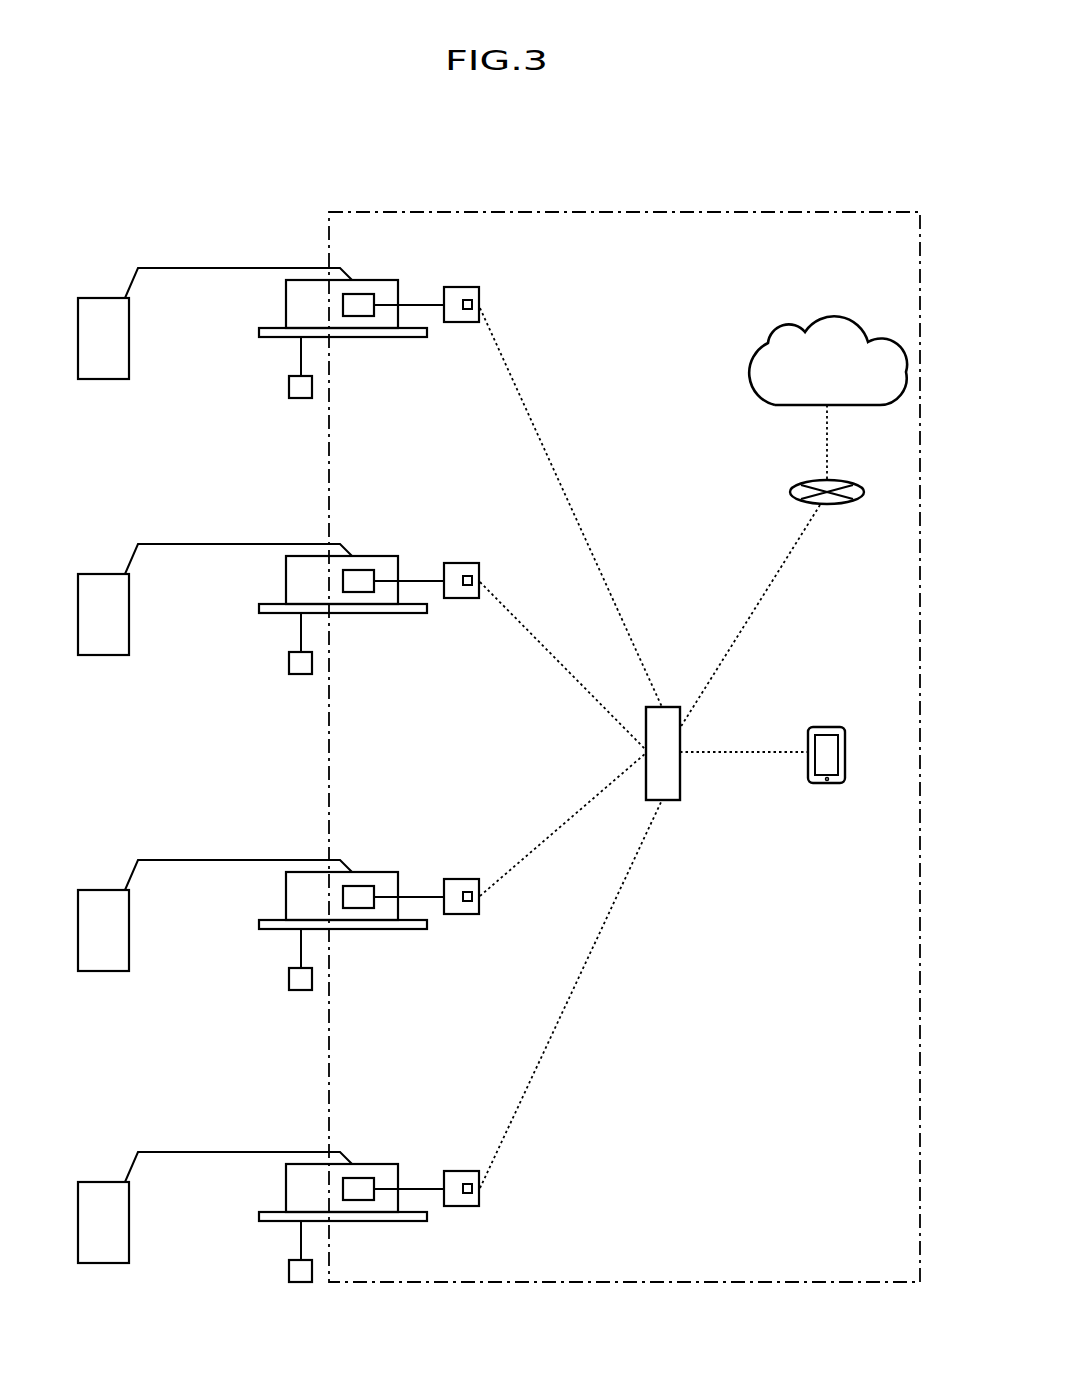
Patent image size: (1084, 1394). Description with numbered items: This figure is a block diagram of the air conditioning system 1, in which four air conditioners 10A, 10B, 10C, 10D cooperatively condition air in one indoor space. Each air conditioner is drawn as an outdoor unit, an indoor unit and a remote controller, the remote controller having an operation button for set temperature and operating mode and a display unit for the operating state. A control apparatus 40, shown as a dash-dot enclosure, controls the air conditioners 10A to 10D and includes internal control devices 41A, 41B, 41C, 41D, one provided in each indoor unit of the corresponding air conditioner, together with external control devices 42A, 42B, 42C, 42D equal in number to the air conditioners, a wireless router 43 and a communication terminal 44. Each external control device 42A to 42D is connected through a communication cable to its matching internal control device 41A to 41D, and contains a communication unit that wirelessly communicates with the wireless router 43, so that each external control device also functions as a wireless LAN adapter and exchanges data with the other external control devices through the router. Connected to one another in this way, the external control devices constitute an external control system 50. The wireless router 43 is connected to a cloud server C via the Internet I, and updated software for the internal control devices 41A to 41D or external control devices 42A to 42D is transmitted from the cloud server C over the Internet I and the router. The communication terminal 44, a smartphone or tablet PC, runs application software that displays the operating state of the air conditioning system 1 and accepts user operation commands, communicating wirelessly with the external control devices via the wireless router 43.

The air conditioning system 1 is at (137, 187).
The first air conditioner 10A is at (257, 250).
The second air conditioner 10B is at (287, 557).
The third air conditioner 10C is at (287, 875).
The fourth air conditioner 10D is at (288, 1167).
The control apparatus 40 is at (862, 1283).
The first internal control device 41A is at (361, 294).
The second internal control device 41B is at (369, 555).
The third internal control device 41C is at (369, 871).
The fourth internal control device 41D is at (370, 1163).
The first external control device 42A is at (462, 323).
The second external control device 42B is at (470, 608).
The third external control device 42C is at (470, 924).
The fourth external control device 42D is at (471, 1216).
The wireless router 43 is at (680, 783).
The communication terminal 44 is at (827, 783).
The external control system 50 is at (503, 308).
The cloud server C is at (747, 372).
The Internet I is at (790, 491).